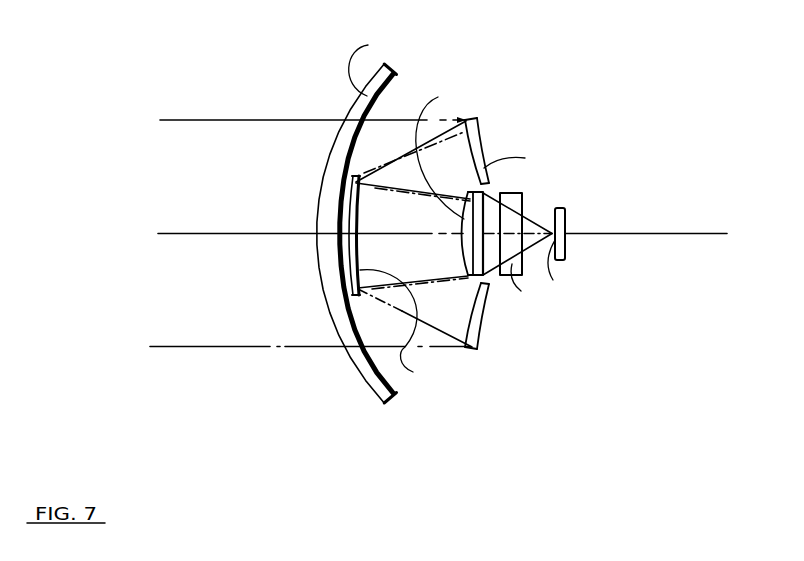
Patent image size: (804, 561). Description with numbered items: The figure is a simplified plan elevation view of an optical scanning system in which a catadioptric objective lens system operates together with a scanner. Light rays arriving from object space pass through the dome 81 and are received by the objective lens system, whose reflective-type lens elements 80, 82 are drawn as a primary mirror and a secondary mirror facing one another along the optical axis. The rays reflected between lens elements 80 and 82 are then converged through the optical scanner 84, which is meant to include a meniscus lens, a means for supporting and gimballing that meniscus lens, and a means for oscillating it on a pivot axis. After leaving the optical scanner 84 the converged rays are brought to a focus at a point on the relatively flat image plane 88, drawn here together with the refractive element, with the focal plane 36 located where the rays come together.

The dome 81 is at (355, 106).
The lens element 82 is at (351, 175).
The lens element 80 is at (481, 146).
The image plane 88 is at (463, 247).
The optical scanner 84 is at (517, 203).
The focal plane 36 is at (556, 209).